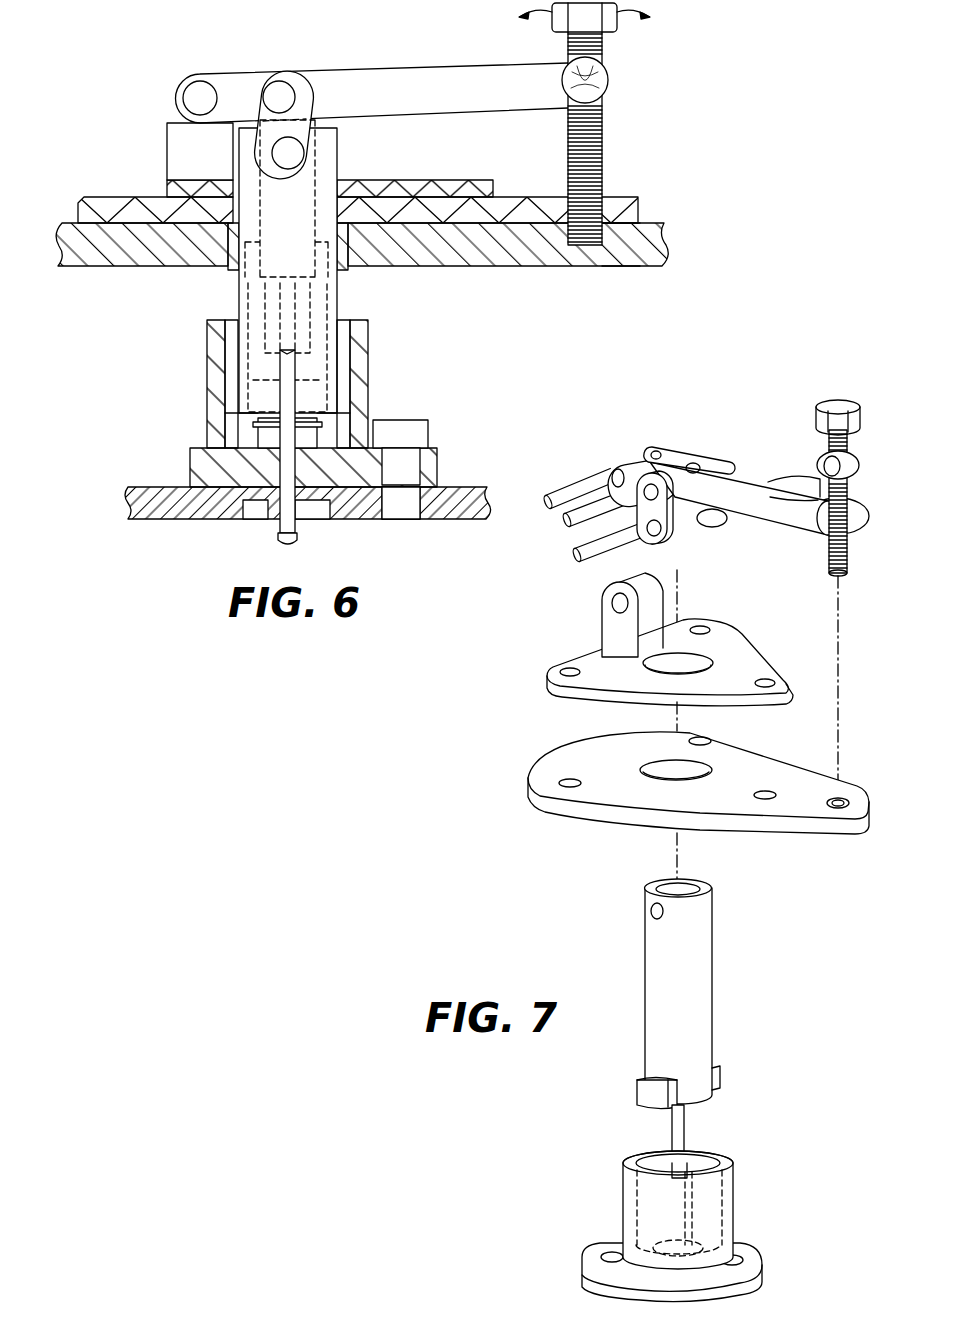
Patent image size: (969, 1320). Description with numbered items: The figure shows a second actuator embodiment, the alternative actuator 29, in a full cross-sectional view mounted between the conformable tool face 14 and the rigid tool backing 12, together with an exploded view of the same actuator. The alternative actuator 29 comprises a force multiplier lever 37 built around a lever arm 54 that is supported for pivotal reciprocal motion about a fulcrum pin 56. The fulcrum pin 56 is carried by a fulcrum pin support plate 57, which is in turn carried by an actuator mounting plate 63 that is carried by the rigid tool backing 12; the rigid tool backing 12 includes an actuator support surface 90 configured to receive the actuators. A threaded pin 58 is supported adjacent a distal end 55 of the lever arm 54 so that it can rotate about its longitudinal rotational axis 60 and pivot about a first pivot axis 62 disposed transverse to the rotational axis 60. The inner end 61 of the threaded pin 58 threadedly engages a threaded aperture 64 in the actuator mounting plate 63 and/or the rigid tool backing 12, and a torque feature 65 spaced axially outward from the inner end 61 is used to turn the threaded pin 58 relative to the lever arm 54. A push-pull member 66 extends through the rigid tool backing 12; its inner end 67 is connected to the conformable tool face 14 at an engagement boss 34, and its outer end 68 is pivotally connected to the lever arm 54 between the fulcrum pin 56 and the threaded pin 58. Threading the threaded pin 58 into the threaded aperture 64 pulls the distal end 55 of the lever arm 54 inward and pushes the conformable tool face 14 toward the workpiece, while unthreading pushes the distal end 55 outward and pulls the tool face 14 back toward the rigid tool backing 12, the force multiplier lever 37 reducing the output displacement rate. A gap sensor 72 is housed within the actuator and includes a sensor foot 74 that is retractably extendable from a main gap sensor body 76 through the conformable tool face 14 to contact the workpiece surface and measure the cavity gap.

In FIG. 6, the rigid tool backing 12 is at (58, 206).
In FIG. 6, the conformable tool face 14 is at (154, 470).
In FIG. 6, the alternative actuator 29 is at (238, 96).
In FIG. 7, the alternative actuator 29 is at (663, 461).
In FIG. 6, the force multiplier lever 37 is at (240, 63).
In FIG. 7, the force multiplier lever 37 is at (648, 438).
In FIG. 6, the engagement boss 34 is at (445, 482).
In FIG. 6, the lever arm 54 is at (343, 69).
In FIG. 7, the lever arm 54 is at (733, 471).
In FIG. 6, the distal end 55 is at (609, 80).
In FIG. 7, the distal end 55 is at (867, 514).
In FIG. 6, the fulcrum pin 56 is at (195, 96).
In FIG. 7, the fulcrum pin 56 is at (588, 487).
In FIG. 6, the fulcrum pin support plate 57 is at (97, 200).
In FIG. 7, the fulcrum pin support plate 57 is at (598, 655).
In FIG. 6, the threaded pin 58 is at (590, 124).
In FIG. 7, the threaded pin 58 is at (857, 487).
In FIG. 7, the longitudinal rotational axis 60 is at (840, 640).
In FIG. 7, the inner end 61 is at (842, 574).
In FIG. 7, the first pivot axis 62 is at (783, 485).
In FIG. 6, the actuator mounting plate 63 is at (497, 255).
In FIG. 7, the actuator mounting plate 63 is at (707, 798).
In FIG. 6, the threaded aperture 64 is at (610, 240).
In FIG. 7, the threaded aperture 64 is at (845, 792).
In FIG. 7, the torque feature 65 is at (838, 420).
In FIG. 7, the push-pull member 66 is at (705, 987).
In FIG. 6, the inner end 67 is at (325, 415).
In FIG. 7, the inner end 67 is at (703, 1100).
In FIG. 6, the outer end 68 is at (323, 128).
In FIG. 7, the outer end 68 is at (680, 893).
In FIG. 6, the gap sensor 72 is at (256, 266).
In FIG. 7, the gap sensor 72 is at (663, 1115).
In FIG. 6, the sensor foot 74 is at (285, 548).
In FIG. 7, the sensor foot 74 is at (638, 1166).
In FIG. 6, the main gap sensor body 76 is at (283, 197).
In FIG. 6, the actuator support surface 90 is at (660, 186).